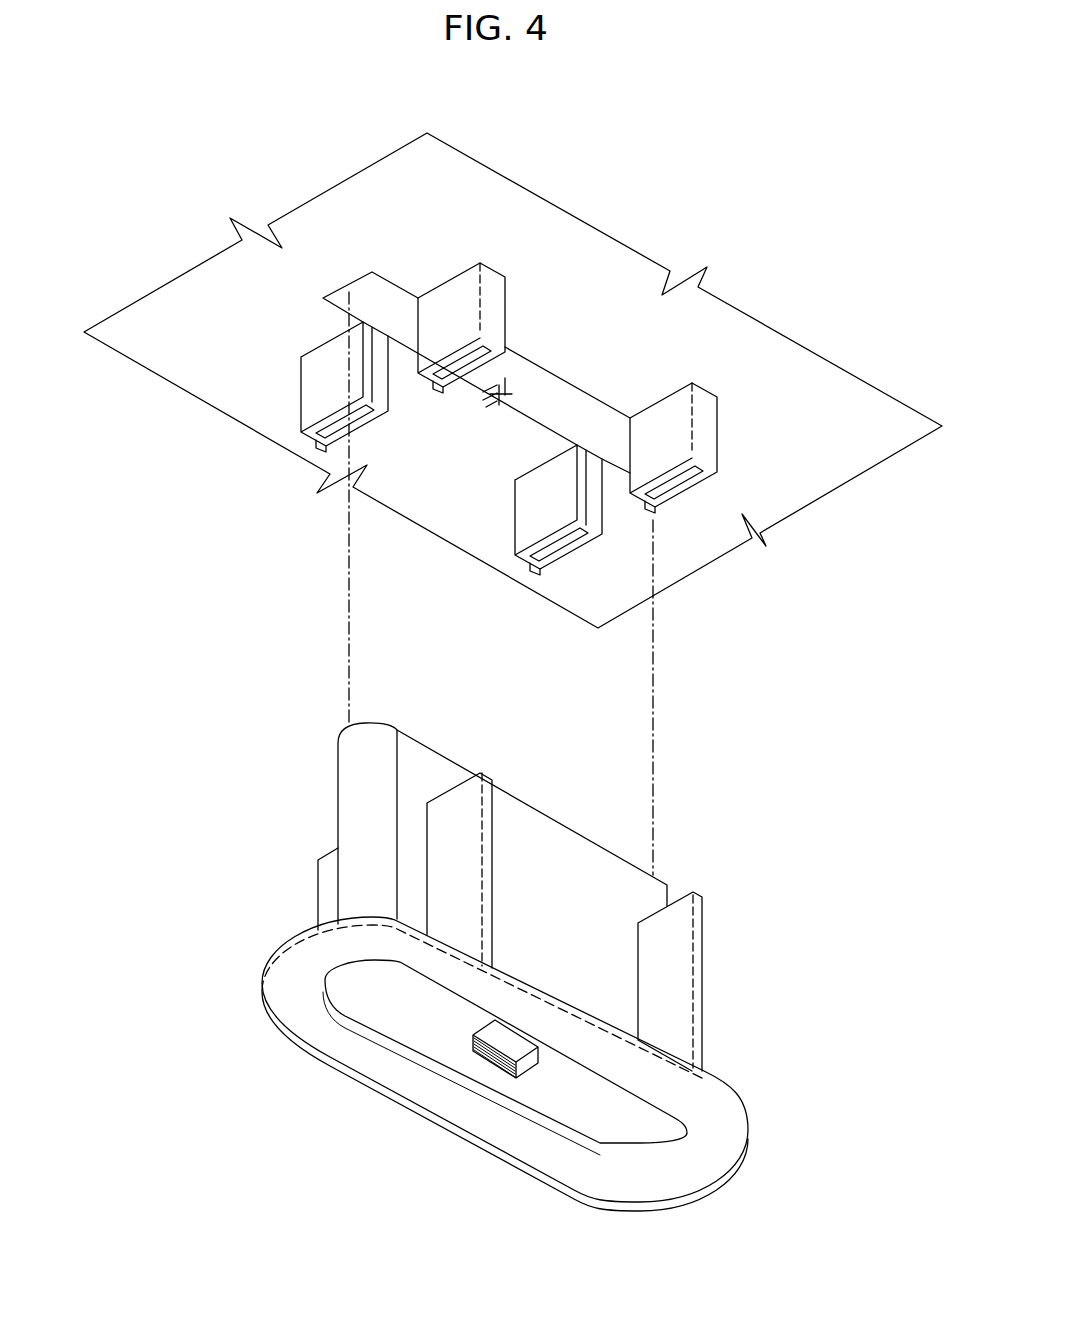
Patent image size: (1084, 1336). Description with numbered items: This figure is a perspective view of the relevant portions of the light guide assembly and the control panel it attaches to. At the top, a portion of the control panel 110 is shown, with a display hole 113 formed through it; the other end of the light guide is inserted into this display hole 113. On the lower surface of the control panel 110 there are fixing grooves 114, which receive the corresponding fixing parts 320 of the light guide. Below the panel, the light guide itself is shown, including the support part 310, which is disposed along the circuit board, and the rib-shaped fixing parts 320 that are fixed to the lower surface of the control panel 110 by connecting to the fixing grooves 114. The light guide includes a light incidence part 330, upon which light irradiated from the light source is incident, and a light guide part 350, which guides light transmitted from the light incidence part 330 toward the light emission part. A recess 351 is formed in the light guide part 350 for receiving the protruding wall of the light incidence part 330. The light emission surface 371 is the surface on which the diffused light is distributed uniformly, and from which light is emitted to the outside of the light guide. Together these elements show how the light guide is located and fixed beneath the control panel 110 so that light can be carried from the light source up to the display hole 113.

The control panel 110 is at (370, 195).
The display hole 113 is at (560, 402).
The fixing grooves 114 is at (358, 415).
The support part 310 is at (287, 940).
The fixing parts 320 is at (488, 778).
The light incidence part 330 is at (498, 1074).
The light guide part 350 is at (610, 870).
The recess 351 is at (420, 1027).
The light emission surface 371 is at (556, 816).